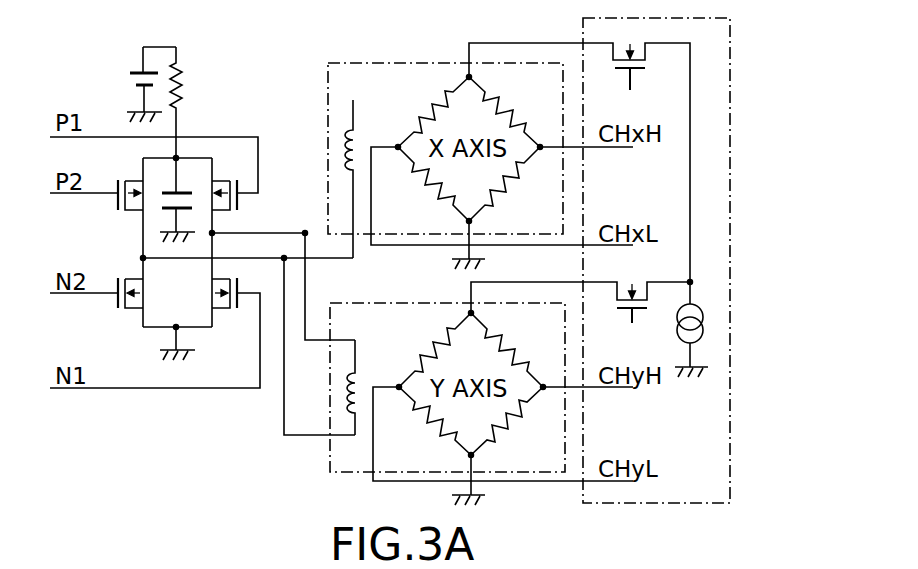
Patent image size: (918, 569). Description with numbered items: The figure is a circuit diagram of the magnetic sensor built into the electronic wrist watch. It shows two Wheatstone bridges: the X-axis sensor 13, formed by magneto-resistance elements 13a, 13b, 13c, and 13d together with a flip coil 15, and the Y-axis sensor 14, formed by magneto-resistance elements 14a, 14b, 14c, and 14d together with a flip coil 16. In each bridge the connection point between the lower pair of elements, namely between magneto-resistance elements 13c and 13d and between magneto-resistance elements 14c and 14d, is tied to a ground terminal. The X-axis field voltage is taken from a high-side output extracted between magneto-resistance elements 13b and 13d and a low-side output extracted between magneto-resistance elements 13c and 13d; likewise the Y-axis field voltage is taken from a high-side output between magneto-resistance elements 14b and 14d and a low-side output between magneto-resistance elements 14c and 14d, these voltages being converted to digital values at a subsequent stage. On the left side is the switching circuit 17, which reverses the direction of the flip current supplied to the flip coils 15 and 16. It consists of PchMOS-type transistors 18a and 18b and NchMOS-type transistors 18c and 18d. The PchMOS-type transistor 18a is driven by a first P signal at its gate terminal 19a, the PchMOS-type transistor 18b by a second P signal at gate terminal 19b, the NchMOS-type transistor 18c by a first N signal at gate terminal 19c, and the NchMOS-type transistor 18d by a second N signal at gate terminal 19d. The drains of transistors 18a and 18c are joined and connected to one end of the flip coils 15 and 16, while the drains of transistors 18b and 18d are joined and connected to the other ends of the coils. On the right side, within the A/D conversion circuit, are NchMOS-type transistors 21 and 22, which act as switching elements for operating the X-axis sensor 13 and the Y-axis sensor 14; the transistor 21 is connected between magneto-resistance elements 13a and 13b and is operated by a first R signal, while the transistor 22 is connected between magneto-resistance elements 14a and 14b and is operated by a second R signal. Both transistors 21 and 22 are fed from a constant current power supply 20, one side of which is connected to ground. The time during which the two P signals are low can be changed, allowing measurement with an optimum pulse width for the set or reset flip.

The X-axis sensor 13 is at (318, 78).
The magneto-resistance element 13a is at (427, 112).
The magneto-resistance element 13b is at (511, 112).
The magneto-resistance element 13c is at (428, 185).
The magneto-resistance element 13d is at (511, 185).
The Y-axis sensor 14 is at (320, 458).
The magneto-resistance element 14a is at (428, 350).
The magneto-resistance element 14b is at (513, 350).
The magneto-resistance element 14c is at (429, 424).
The magneto-resistance element 14d is at (513, 424).
The flip coil 15 is at (356, 128).
The flip coil 16 is at (357, 372).
The switching circuit 17 is at (204, 84).
The PchMOS-type transistor 18a is at (225, 181).
The PchMOS-type transistor 18b is at (127, 181).
The NchMOS-type transistor 18c is at (226, 309).
The NchMOS-type transistor 18d is at (130, 309).
The gate terminal 19a is at (240, 200).
The gate terminal 19b is at (118, 200).
The gate terminal 19c is at (240, 283).
The gate terminal 19d is at (118, 298).
The constant current power supply 20 is at (690, 392).
The NchMOS-type transistor 21 is at (633, 72).
The NchMOS-type transistor 22 is at (635, 312).